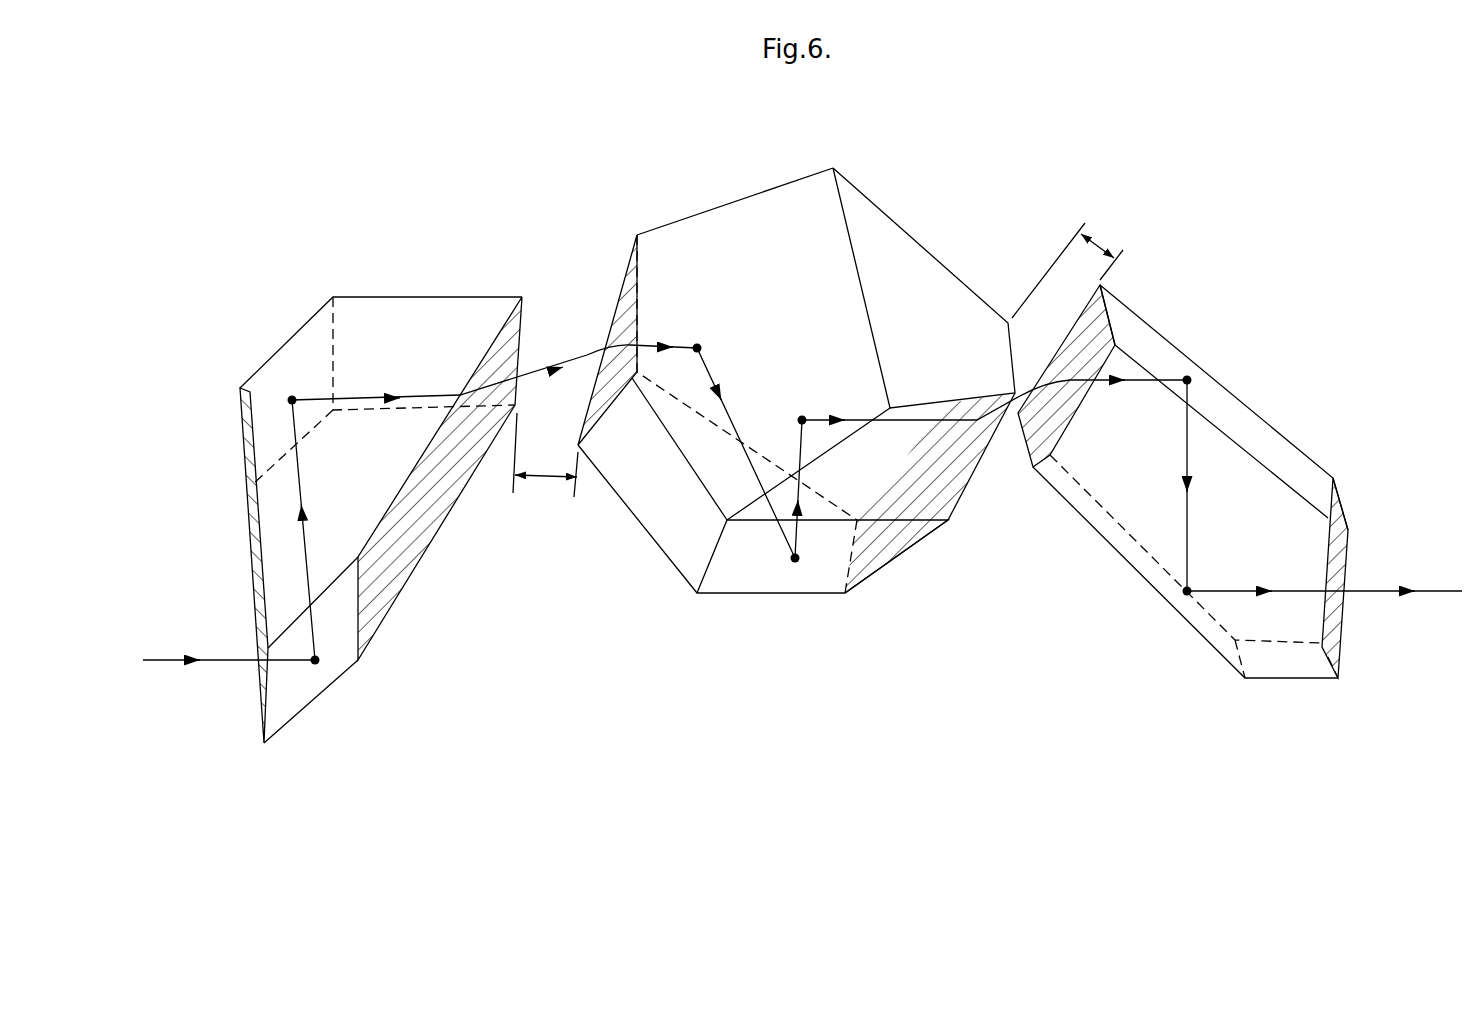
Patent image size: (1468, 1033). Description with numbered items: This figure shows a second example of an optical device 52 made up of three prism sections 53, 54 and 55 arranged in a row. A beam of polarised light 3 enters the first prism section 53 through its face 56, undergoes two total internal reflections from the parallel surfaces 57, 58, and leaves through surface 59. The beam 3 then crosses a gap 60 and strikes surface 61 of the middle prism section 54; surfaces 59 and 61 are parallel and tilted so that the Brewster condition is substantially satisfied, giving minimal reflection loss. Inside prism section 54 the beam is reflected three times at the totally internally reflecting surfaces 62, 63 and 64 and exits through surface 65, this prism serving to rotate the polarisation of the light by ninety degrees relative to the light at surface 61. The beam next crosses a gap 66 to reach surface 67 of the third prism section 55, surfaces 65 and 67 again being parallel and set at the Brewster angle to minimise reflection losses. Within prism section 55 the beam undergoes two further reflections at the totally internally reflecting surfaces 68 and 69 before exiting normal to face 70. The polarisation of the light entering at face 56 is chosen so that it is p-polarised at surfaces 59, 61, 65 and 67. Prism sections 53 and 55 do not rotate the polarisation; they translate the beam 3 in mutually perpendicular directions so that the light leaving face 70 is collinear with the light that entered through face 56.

The beam of polarised light 3 is at (171, 660).
The optical device 52 is at (660, 741).
The prism section 53 is at (303, 312).
The prism section 54 is at (759, 181).
The prism section 55 is at (1226, 358).
The face 56 is at (258, 690).
The parallel surface 57 is at (297, 683).
The parallel surface 58 is at (277, 383).
The surface 59 is at (430, 494).
The gap 60 is at (545, 455).
The surface 61 is at (625, 285).
The totally internally reflecting surface 62 is at (682, 245).
The totally internally reflecting surface 63 is at (768, 577).
The totally internally reflecting surface 64 is at (827, 240).
The surface 65 is at (950, 487).
The gap 66 is at (1070, 265).
The surface 67 is at (1037, 447).
The totally internally reflecting surface 68 is at (1278, 430).
The totally internally reflecting surface 69 is at (1168, 583).
The face 70 is at (1343, 637).